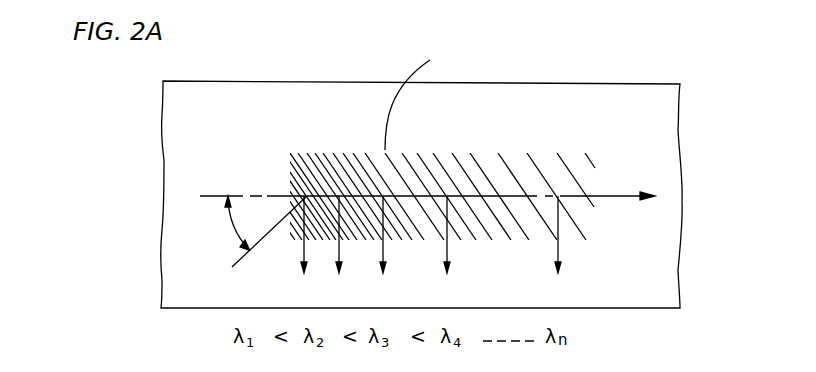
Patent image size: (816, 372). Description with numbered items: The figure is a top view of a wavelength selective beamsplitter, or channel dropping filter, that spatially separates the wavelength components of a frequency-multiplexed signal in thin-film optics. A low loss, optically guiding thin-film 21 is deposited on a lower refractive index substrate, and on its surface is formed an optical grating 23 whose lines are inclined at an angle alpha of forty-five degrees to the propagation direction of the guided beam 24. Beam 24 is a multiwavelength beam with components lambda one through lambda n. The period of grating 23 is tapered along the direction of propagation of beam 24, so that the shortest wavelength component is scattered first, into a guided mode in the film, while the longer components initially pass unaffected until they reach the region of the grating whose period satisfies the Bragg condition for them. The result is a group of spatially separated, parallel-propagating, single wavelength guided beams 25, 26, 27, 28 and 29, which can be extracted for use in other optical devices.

The thin-film 21 is at (680, 130).
The optical grating 23 is at (462, 157).
The guided beam 24 is at (206, 194).
The single wavelength guided beam 25 is at (303, 253).
The single wavelength guided beam 26 is at (338, 252).
The single wavelength guided beam 27 is at (382, 252).
The single wavelength guided beam 28 is at (446, 255).
The single wavelength guided beam 29 is at (557, 253).